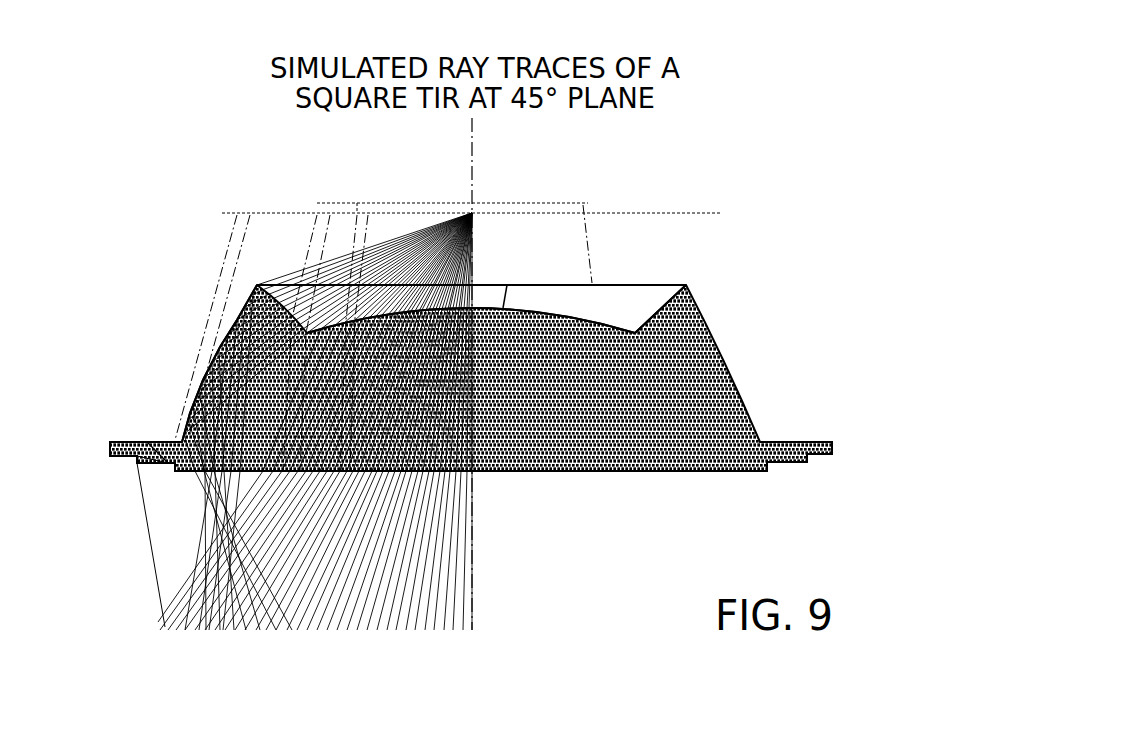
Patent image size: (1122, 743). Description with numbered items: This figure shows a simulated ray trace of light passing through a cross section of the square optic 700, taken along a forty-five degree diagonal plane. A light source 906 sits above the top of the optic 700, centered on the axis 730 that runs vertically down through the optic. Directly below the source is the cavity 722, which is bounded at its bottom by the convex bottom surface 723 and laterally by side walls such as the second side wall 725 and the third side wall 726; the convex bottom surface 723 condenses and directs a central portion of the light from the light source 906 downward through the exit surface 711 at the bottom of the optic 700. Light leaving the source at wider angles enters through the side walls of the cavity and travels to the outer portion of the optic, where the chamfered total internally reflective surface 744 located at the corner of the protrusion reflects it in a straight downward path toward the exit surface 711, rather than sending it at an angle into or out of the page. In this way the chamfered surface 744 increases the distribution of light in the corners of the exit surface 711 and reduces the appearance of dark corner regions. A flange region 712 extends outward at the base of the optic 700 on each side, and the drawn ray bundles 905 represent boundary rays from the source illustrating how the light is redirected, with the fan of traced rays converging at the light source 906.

The optic 700 is at (805, 187).
The exit surface 711 is at (692, 473).
The mounting flange 712 is at (812, 442).
The cavity 722 is at (612, 243).
The convex bottom surface 723 is at (607, 325).
The second side wall 725 is at (620, 285).
The third side wall 726 is at (488, 292).
The axis 730 is at (473, 139).
The chamfered total internally reflective surface 744 is at (198, 400).
The boundary rays 905 is at (275, 213).
The light source 906 is at (470, 211).